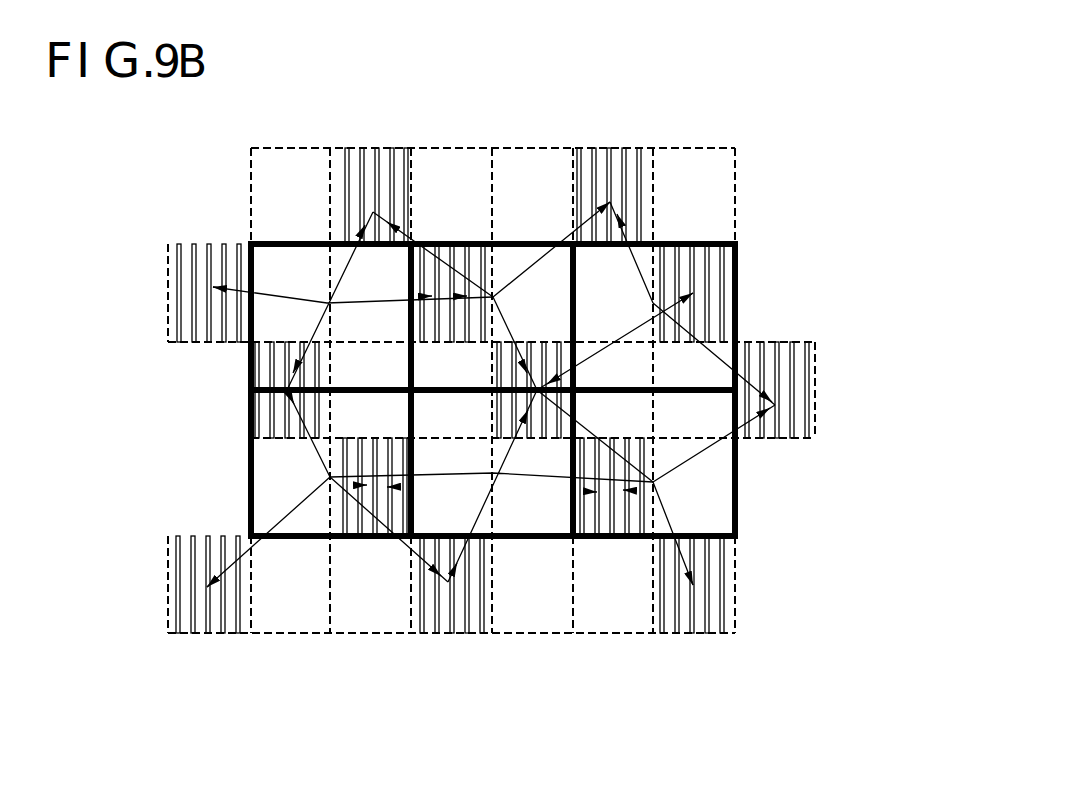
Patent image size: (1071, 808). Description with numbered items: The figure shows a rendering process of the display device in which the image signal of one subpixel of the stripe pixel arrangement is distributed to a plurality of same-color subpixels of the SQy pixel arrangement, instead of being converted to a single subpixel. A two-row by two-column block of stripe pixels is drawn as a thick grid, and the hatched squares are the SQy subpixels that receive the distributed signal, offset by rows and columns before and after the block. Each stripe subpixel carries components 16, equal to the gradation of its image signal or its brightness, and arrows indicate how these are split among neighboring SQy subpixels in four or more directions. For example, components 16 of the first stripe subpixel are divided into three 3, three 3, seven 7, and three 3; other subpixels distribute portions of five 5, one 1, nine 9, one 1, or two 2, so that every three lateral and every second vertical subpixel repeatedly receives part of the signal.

The component distribution amount (one) 1 is at (366, 399).
The component distribution amount (two) 2 is at (656, 387).
The component distribution amount (three) 3 is at (458, 393).
The component distribution amount (five) 5 is at (416, 381).
The component distribution amount (seven) 7 is at (476, 394).
The component distribution amount (nine) 9 is at (512, 392).
The components of the subpixel 16 is at (486, 397).